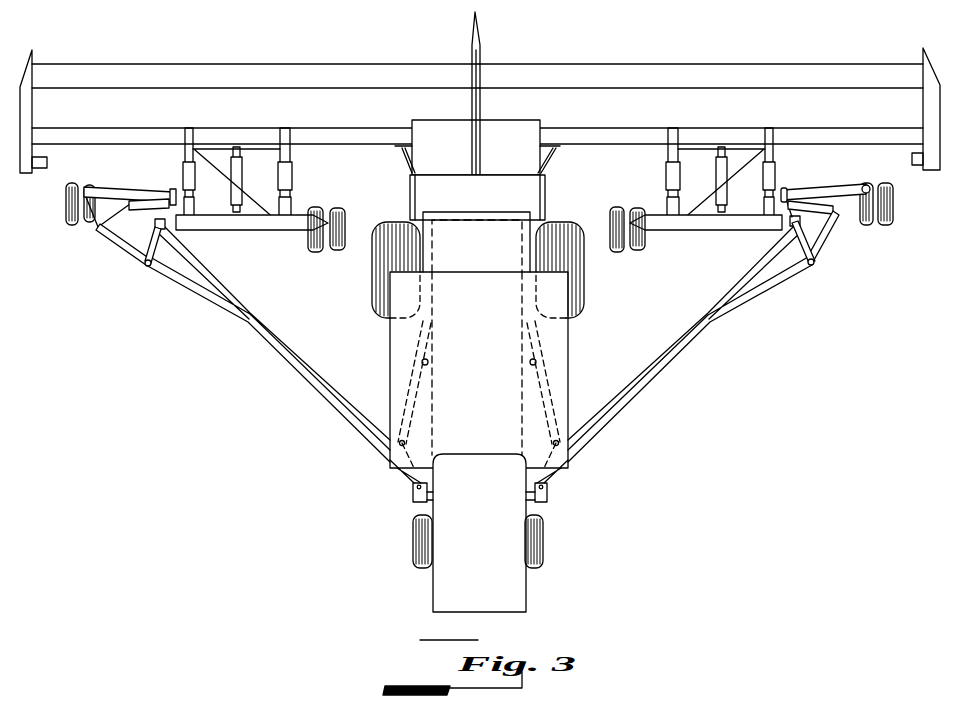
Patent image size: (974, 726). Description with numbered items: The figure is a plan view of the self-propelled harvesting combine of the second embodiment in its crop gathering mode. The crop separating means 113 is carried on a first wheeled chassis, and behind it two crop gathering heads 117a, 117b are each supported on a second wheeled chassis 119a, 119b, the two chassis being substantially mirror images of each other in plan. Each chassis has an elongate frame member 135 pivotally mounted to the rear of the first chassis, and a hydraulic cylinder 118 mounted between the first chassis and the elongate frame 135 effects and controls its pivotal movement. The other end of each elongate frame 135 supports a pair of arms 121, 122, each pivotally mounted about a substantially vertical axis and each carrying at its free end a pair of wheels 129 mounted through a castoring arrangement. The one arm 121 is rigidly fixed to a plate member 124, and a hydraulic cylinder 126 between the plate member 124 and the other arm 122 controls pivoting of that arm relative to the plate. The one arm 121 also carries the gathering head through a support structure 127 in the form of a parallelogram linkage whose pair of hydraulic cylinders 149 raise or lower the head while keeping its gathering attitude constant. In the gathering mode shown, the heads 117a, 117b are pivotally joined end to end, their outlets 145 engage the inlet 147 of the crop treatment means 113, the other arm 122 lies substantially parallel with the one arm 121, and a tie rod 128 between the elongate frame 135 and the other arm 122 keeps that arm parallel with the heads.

The crop separating means 113 is at (553, 340).
The crop gathering head 117a is at (857, 64).
The crop gathering head 117b is at (171, 64).
The hydraulic cylinder 118 is at (417, 380).
The second wheeled chassis 119a is at (772, 309).
The second wheeled chassis 119b is at (172, 298).
The one arm 121 is at (727, 222).
The other arm 122 is at (808, 188).
The plate member 124 is at (793, 230).
The hydraulic cylinder 126 is at (833, 216).
The support structure 127 is at (652, 176).
The tie rod 128 is at (828, 244).
The wheels 129 is at (896, 208).
The elongate frame member 135 is at (320, 388).
The outlets 145 is at (478, 155).
The inlet 147 is at (410, 192).
The hydraulic cylinders 149 is at (760, 164).